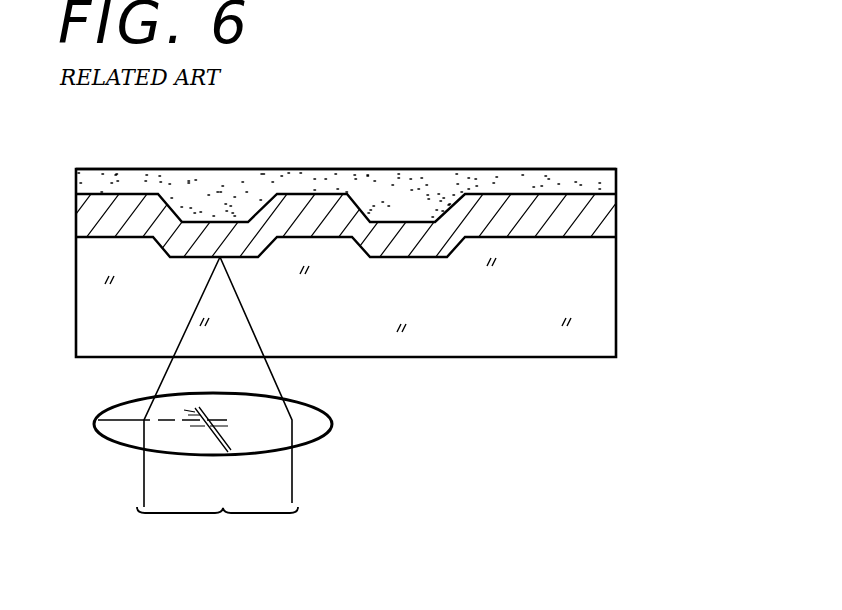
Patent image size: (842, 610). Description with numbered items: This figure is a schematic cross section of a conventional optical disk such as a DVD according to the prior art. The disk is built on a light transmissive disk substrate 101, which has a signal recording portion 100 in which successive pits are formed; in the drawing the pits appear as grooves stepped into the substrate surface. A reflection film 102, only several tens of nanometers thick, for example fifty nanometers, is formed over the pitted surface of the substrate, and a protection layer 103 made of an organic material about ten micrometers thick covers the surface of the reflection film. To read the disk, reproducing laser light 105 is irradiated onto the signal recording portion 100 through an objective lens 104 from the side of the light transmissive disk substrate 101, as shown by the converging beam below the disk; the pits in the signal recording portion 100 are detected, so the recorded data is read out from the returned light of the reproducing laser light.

The signal recording portion 100 is at (243, 257).
The light transmissive disk substrate 101 is at (597, 305).
The reflection film 102 is at (602, 217).
The protection layer 103 is at (392, 187).
The objective lens 104 is at (315, 430).
The reproducing laser light 105 is at (217, 533).